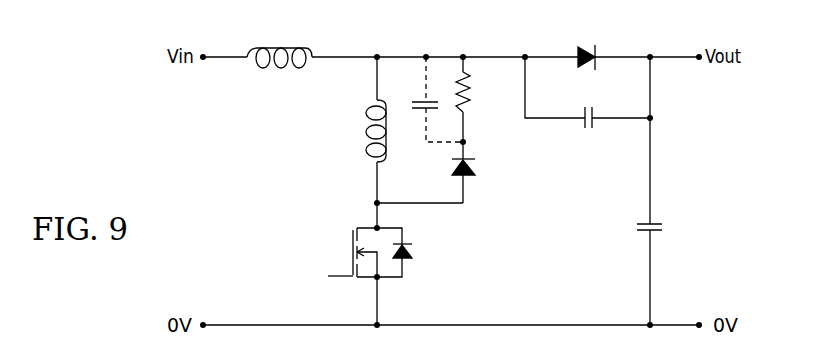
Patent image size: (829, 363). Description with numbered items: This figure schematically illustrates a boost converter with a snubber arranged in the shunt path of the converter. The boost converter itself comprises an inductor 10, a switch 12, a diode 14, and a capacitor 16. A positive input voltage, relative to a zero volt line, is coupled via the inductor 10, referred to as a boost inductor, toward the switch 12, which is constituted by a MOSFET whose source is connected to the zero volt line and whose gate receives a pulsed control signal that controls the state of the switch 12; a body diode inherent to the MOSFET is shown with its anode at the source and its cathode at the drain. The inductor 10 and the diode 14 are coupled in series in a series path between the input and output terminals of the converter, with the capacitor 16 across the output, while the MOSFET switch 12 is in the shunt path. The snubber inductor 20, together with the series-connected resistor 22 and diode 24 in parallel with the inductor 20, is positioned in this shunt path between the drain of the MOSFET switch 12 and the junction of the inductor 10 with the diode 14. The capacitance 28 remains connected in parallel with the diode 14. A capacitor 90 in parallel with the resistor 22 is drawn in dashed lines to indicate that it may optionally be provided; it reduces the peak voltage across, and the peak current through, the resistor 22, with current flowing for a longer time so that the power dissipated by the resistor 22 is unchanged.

The inductor 10 is at (288, 71).
The inductor 20 is at (365, 118).
The capacitor 90 is at (410, 103).
The resistor 22 is at (475, 93).
The diode 24 is at (477, 165).
The diode 14 is at (588, 70).
The capacitance 28 is at (587, 131).
The capacitor 16 is at (634, 227).
The switch 12 is at (342, 248).